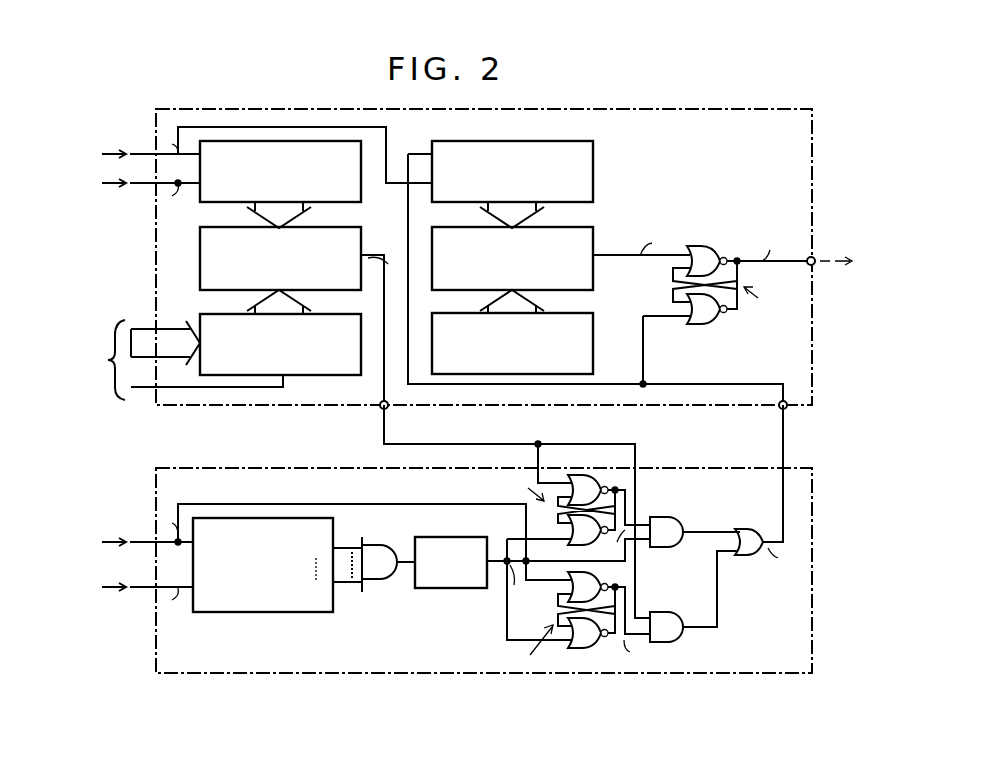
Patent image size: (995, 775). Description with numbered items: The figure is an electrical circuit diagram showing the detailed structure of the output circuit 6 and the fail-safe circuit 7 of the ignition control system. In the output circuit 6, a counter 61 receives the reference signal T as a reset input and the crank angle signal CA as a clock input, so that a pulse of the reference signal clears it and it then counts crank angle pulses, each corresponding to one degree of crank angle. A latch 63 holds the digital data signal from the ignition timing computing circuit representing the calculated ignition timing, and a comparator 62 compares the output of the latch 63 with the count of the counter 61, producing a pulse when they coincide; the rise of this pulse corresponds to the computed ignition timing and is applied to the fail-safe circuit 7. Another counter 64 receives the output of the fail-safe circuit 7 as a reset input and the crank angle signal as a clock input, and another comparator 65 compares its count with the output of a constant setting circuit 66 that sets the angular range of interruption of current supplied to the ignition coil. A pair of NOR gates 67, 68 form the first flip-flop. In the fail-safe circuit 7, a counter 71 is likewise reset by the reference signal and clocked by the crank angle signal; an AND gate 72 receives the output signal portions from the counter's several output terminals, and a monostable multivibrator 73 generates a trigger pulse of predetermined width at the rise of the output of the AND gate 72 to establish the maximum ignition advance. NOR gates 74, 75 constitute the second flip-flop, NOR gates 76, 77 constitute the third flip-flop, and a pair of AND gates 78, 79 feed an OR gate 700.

The output circuit 6 is at (770, 109).
The fail-safe circuit 7 is at (733, 673).
The counter 61 is at (361, 183).
The comparator 62 is at (372, 236).
The latch 63 is at (317, 376).
The counter 64 is at (593, 166).
The comparator 65 is at (593, 246).
The constant setting circuit 66 is at (593, 358).
The NOR gate 67 is at (697, 247).
The NOR gate 68 is at (699, 325).
The counter 71 is at (275, 613).
The AND gate 72 is at (382, 582).
The monostable multivibrator 73 is at (445, 589).
The NOR gate 74 is at (590, 477).
The NOR gate 75 is at (566, 537).
The NOR gate 76 is at (568, 590).
The NOR gate 77 is at (578, 647).
The AND gate 78 is at (657, 517).
The AND gate 79 is at (672, 598).
The OR gate 700 is at (762, 518).